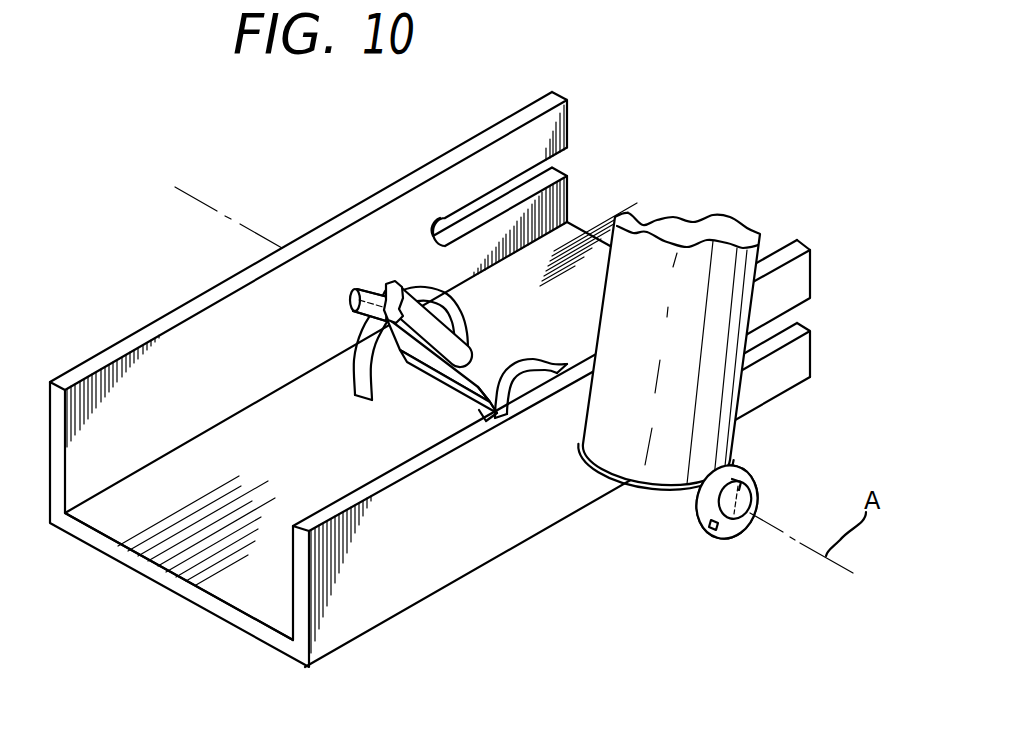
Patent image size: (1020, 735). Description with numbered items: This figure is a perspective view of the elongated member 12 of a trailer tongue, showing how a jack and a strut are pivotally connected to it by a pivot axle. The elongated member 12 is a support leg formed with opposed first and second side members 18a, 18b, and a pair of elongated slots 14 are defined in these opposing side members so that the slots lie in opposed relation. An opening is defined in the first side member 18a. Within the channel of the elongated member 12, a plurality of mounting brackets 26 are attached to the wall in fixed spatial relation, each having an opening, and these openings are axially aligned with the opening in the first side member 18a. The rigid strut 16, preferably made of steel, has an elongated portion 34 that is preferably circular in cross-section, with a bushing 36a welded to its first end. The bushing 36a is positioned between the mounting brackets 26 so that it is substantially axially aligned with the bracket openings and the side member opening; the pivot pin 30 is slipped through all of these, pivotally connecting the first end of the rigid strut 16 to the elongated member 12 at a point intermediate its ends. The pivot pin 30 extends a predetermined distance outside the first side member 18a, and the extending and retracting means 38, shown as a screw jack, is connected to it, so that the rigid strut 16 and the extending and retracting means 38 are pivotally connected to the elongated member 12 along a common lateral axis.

The elongated member 12 is at (159, 277).
The elongated slots 14 is at (546, 170).
The rigid strut 16 is at (351, 421).
The first side member 18a is at (458, 527).
The second side member 18b is at (224, 316).
The mounting brackets 26 is at (555, 366).
The pivot pin 30 is at (364, 283).
The elongated portion 34 is at (452, 325).
The bushing 36a is at (481, 354).
The extending and retracting means 38 is at (726, 280).